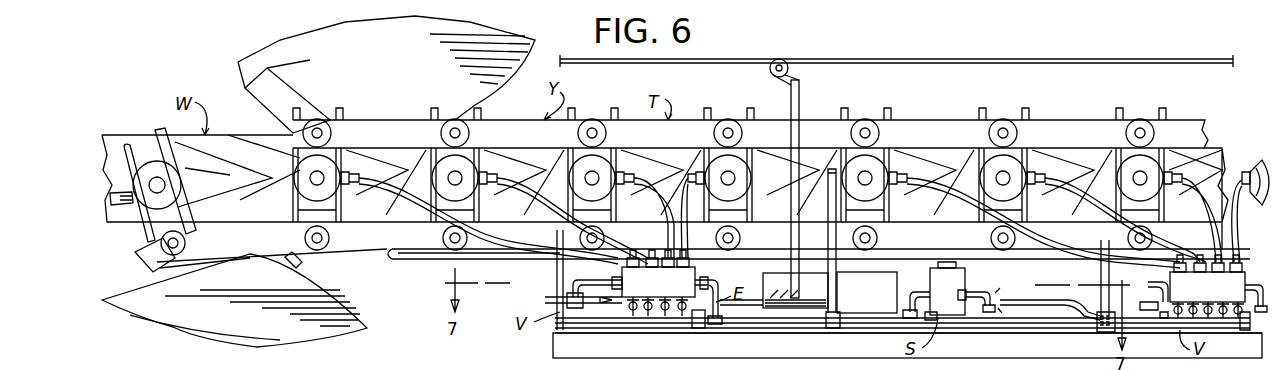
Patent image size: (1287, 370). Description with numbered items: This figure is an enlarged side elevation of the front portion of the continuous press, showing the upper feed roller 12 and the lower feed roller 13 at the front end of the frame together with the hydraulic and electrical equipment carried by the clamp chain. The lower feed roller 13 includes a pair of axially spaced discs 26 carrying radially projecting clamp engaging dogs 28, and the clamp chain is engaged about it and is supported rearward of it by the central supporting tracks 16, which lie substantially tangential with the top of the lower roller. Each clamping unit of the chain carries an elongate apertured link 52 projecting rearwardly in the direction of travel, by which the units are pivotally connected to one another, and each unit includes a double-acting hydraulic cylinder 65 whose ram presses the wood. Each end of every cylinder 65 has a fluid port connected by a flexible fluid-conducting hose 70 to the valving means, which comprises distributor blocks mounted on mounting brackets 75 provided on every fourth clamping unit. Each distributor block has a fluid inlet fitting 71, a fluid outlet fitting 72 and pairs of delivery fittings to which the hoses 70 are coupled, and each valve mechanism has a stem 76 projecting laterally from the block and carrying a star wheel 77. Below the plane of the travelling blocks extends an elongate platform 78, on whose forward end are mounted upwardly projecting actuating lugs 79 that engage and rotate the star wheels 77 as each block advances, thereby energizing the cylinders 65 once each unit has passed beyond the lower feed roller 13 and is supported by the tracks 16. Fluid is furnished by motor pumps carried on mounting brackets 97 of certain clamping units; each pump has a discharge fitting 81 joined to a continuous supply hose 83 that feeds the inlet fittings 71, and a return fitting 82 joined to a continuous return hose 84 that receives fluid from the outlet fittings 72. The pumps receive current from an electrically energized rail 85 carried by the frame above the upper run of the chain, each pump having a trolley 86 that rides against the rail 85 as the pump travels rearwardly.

The upper feed roller 12 is at (283, 45).
The lower feed roller 13 is at (333, 314).
The central supporting tracks 16 is at (428, 263).
The discs 26 is at (282, 335).
The clamp engaging dogs 28 is at (292, 266).
The apertured link 52 is at (246, 248).
The cylinder 65 is at (333, 176).
The flexible fluid-conducting hose 70 is at (372, 202).
The fluid inlet fitting 71 is at (707, 283).
The fluid outlet fitting 72 is at (620, 282).
The mounting bracket 75 is at (560, 272).
The stem 76 is at (1180, 318).
The star wheel 77 is at (1250, 322).
The platform 78 is at (1036, 328).
The actuating lugs 79 is at (697, 322).
The discharge fitting 81 is at (933, 295).
The return fitting 82 is at (972, 290).
The supply hose 83 is at (872, 322).
The return hose 84 is at (750, 305).
The electrically energized rail 85 is at (930, 38).
The trolley 86 is at (800, 72).
The mounting brackets 97 is at (828, 210).